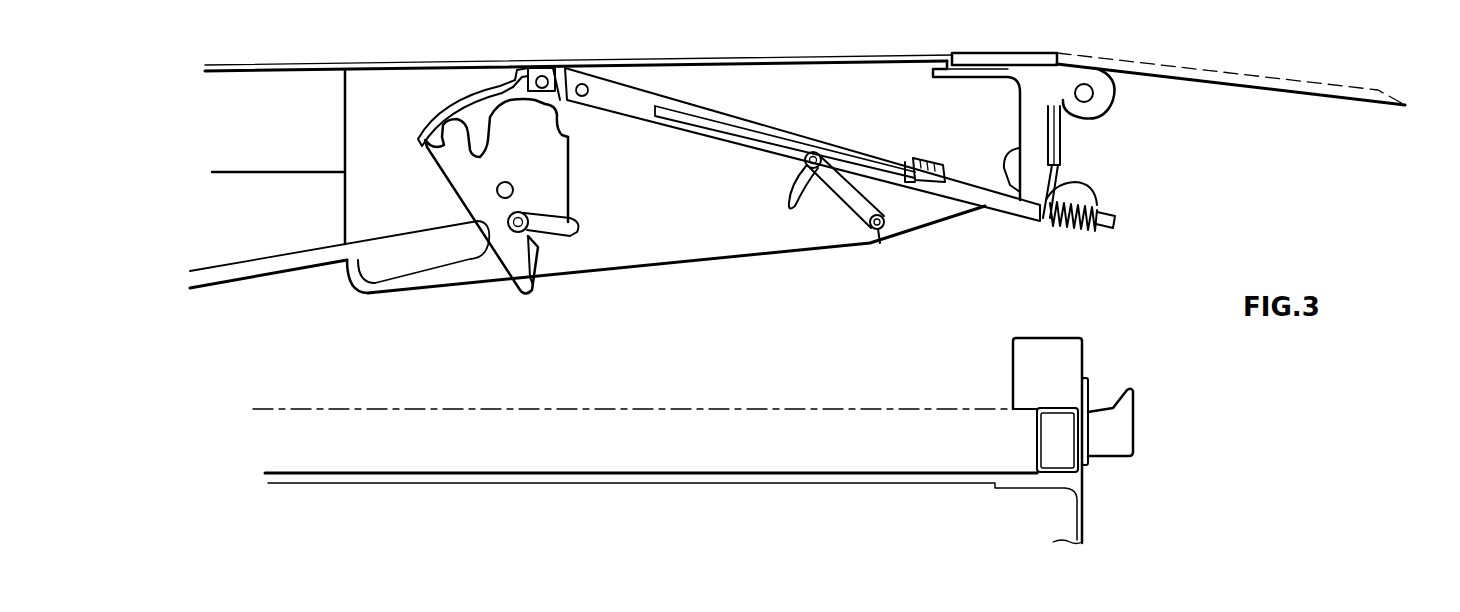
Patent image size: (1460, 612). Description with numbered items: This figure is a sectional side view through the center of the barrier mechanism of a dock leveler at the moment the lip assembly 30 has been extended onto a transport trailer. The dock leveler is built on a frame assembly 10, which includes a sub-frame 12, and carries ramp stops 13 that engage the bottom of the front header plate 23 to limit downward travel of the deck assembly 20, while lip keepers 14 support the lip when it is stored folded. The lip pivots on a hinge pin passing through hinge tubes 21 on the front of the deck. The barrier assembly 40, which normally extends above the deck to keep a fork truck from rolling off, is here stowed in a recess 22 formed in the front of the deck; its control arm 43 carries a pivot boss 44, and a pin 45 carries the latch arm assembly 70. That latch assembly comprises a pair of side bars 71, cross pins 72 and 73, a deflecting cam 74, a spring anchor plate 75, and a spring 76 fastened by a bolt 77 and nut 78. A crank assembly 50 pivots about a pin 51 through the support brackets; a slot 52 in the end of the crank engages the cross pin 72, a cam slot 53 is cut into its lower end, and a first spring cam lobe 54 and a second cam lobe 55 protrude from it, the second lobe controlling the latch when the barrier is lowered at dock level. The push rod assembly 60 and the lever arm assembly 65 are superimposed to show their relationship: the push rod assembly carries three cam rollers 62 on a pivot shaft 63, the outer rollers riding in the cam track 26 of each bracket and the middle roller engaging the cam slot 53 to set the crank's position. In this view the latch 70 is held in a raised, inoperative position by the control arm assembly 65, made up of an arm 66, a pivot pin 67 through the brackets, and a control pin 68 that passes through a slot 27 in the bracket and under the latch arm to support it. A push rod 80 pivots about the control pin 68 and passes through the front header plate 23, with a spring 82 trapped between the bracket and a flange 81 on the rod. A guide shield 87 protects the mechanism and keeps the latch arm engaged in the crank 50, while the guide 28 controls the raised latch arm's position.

The frame assembly 10 is at (665, 453).
The sub-frame 12 is at (531, 409).
The ramp stops 13 is at (1084, 360).
The lip keepers 14 is at (1133, 418).
The deck assembly 20 is at (372, 44).
The hinge tubes 21 is at (1095, 92).
The recess 22 is at (973, 62).
The front header plate 23 is at (1045, 214).
The cam track 26 is at (376, 275).
The slot 27 is at (791, 210).
The guide 28 is at (557, 108).
The lip assembly 30 is at (1172, 62).
The barrier assembly 40 is at (1022, 36).
The control arm 43 is at (1020, 104).
The pivot boss 44 is at (1107, 174).
The pin 45 is at (1090, 192).
The crank assembly 50 is at (533, 290).
The pin 51 is at (543, 170).
The slot 52 is at (433, 150).
The cam slot 53 is at (534, 270).
The first spring cam lobe 54 is at (571, 140).
The second cam lobe 55 is at (492, 82).
The push rod assembly 60 is at (268, 262).
The cam rollers 62 is at (567, 232).
The pivot shaft 63 is at (532, 210).
The control arm assembly 65 is at (676, 224).
The arm 66 is at (850, 196).
The pivot pin 67 is at (880, 232).
The control pin 68 is at (803, 158).
The latch arm assembly 70 is at (796, 144).
The side bars 71 is at (712, 110).
The cross pin 72 is at (545, 67).
The cross pin 73 is at (583, 83).
The deflecting cam 74 is at (1010, 160).
The spring anchor plate 75 is at (913, 160).
The spring 76 is at (720, 130).
The bolt 77 is at (945, 160).
The nut 78 is at (936, 186).
The push rod 80 is at (1004, 210).
The flange 81 is at (1102, 226).
The spring 82 is at (1079, 227).
The guide shield 87 is at (440, 106).